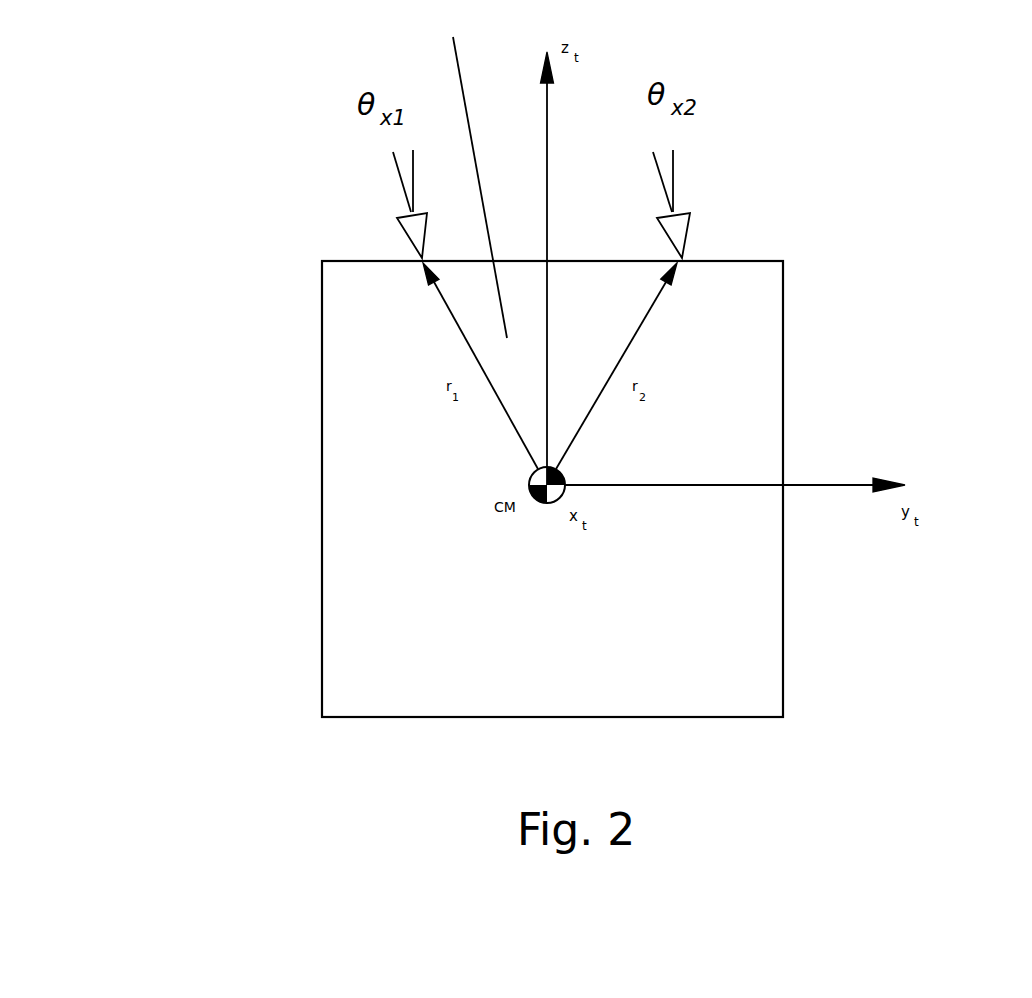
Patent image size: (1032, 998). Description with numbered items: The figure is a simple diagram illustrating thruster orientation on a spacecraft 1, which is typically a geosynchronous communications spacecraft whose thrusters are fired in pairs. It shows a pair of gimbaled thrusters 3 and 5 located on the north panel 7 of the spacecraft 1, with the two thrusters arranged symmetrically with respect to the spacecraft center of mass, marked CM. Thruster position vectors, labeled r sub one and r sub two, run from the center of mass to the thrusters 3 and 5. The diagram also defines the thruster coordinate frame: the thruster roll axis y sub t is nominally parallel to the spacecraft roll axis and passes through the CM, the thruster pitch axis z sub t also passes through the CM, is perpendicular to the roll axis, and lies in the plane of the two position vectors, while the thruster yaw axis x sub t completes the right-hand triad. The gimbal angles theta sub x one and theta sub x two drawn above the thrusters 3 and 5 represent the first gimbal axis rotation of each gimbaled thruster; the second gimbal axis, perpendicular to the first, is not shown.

The spacecraft 1 is at (280, 357).
The gimbaled thruster 3 is at (405, 233).
The gimbaled thruster 5 is at (687, 227).
The north panel 7 is at (472, 178).